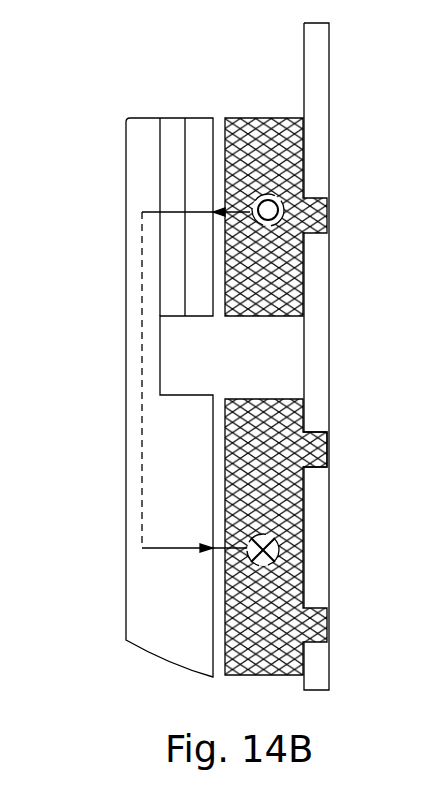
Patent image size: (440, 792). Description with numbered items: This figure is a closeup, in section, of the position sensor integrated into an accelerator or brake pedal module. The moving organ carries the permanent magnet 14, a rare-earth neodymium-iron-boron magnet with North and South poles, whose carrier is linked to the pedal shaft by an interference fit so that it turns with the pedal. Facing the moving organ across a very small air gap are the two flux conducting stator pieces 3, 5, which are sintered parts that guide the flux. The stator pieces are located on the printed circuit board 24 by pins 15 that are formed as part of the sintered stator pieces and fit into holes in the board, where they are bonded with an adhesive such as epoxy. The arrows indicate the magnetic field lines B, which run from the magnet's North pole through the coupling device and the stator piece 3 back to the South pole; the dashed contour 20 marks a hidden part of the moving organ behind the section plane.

The magnet 14 is at (200, 133).
The flux conducting stator piece 3 is at (278, 148).
The pin 15 is at (328, 434).
The hidden contour line 20 is at (142, 432).
The printed circuit board 24 is at (318, 525).
The flux conducting stator piece 5 is at (315, 617).
The magnetic field lines B is at (163, 548).